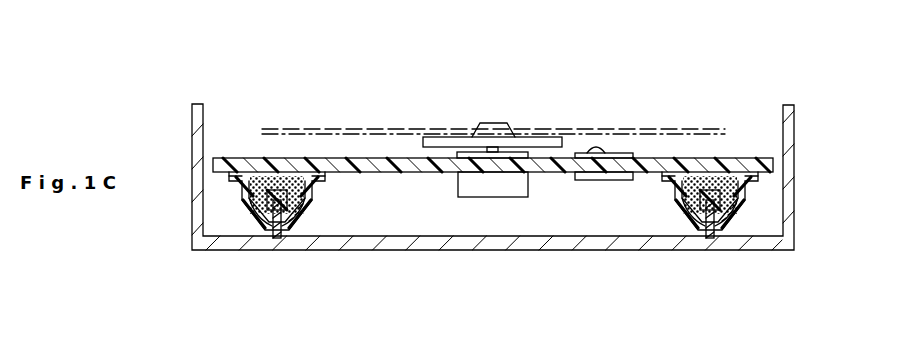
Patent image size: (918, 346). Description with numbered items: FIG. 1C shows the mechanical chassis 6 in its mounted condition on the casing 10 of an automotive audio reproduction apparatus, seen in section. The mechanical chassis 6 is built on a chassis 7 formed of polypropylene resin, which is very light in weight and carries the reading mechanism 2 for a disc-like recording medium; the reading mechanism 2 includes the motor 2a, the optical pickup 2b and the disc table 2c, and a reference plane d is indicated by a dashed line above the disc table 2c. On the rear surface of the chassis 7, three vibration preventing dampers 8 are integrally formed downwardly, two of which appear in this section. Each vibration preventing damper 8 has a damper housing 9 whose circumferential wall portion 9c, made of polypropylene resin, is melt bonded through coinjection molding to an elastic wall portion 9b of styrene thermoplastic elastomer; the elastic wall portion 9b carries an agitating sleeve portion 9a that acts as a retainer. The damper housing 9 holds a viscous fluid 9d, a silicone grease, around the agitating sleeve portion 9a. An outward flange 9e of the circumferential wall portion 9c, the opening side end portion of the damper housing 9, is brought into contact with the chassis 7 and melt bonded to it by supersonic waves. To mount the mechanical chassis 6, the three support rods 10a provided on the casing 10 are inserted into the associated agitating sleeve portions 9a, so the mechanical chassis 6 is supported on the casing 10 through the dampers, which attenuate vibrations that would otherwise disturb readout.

The reading mechanism 2 is at (523, 229).
The motor 2a is at (493, 232).
The optical pickup 2b is at (614, 181).
The disc table 2c is at (543, 150).
The mechanical chassis 6 is at (694, 156).
The chassis 7 is at (404, 173).
The vibration preventing damper 8 is at (309, 226).
The damper housing 9 is at (487, 207).
The agitating sleeve portion 9a is at (298, 210).
The elastic wall portion 9b is at (250, 210).
The circumferential wall portion 9c is at (240, 185).
The viscous fluid 9d is at (262, 185).
The outward flange 9e is at (322, 183).
The casing 10 is at (412, 241).
The support rod 10a is at (274, 250).
The distance d is at (369, 129).